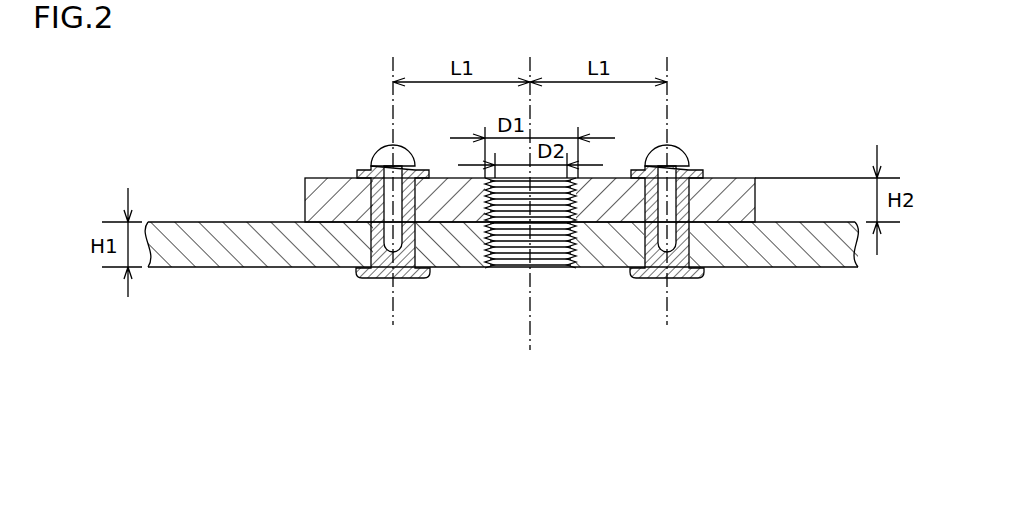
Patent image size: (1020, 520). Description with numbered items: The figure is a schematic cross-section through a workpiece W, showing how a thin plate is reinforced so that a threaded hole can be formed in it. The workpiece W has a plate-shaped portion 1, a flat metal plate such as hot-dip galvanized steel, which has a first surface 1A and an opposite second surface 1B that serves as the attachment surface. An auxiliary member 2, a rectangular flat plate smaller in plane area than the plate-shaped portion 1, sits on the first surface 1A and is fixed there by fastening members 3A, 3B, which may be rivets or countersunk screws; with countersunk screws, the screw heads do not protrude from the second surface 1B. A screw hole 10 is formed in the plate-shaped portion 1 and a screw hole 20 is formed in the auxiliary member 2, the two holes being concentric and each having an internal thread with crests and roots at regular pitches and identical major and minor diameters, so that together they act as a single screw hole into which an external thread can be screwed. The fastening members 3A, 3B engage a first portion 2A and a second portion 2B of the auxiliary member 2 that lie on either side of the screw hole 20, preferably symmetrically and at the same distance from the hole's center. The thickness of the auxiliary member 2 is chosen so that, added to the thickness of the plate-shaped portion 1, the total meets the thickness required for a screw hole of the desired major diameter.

The workpiece W is at (240, 163).
The plate-shaped portion 1 is at (817, 268).
The first surface 1A is at (196, 222).
The second surface 1B is at (200, 267).
The auxiliary member 2 is at (320, 178).
The first portion 2A is at (367, 200).
The second portion 2B is at (690, 203).
The fastening member 3A is at (371, 278).
The fastening member 3B is at (650, 278).
The screw hole 10 is at (570, 245).
The screw hole 20 is at (563, 203).